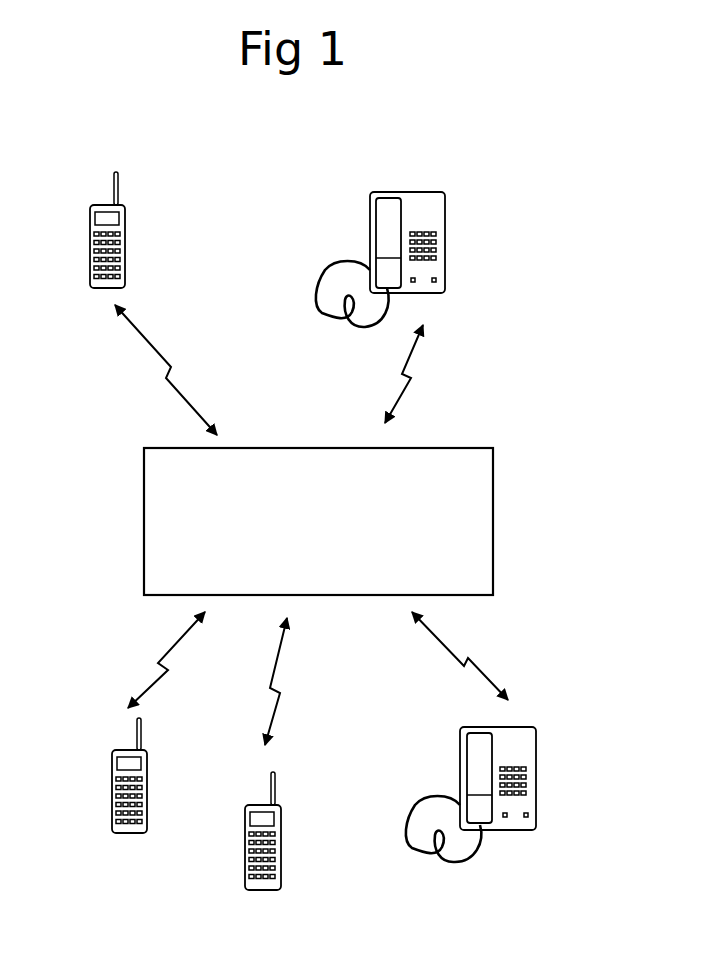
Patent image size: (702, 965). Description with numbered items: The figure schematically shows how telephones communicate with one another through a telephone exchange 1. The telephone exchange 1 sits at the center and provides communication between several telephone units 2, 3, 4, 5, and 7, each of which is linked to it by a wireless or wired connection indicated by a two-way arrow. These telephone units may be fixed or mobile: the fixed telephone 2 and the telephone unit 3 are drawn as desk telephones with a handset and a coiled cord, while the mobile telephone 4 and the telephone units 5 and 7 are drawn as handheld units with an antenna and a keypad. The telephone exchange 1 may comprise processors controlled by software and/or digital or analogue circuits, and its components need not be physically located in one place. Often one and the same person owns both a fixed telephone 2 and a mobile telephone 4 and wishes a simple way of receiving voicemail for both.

The telephone exchange 1 is at (477, 510).
The fixed telephone 2 is at (433, 223).
The telephone unit 3 is at (523, 812).
The mobile telephone 4 is at (100, 235).
The telephone unit 5 is at (258, 882).
The telephone unit 7 is at (127, 790).